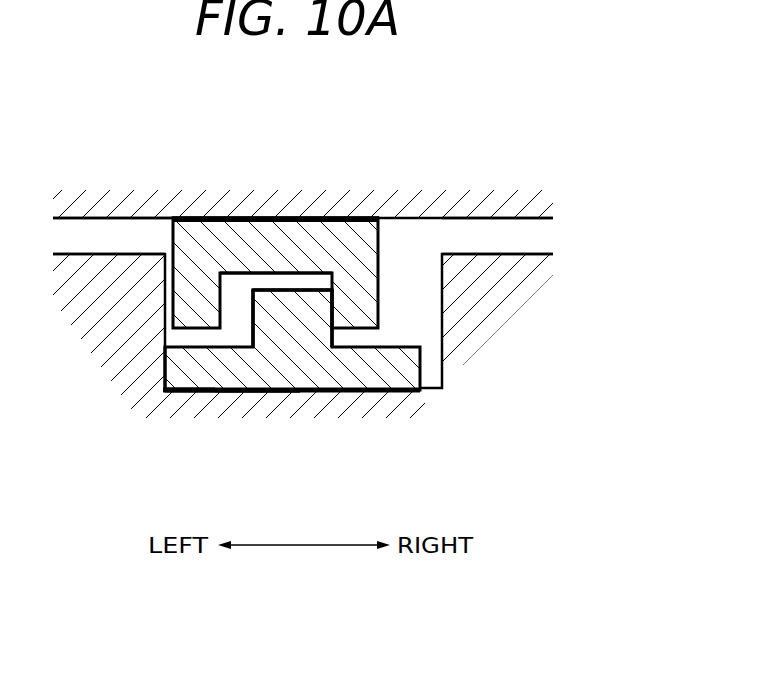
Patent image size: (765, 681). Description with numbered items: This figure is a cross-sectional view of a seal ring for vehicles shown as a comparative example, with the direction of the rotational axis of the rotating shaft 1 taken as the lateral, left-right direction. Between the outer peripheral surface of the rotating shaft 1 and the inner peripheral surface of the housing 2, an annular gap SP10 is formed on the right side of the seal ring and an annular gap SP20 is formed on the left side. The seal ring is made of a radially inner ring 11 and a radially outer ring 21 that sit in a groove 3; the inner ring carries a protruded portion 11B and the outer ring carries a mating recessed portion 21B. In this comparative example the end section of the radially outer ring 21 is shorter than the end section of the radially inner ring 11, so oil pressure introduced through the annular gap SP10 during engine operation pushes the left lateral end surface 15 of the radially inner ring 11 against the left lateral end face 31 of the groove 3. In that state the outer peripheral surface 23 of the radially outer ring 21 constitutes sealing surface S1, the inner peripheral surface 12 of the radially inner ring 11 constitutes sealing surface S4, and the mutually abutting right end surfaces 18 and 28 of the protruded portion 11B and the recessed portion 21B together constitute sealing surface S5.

The rotating shaft 1 is at (89, 272).
The housing 2 is at (108, 197).
The groove 3 is at (428, 367).
The radially inner ring 11 is at (407, 398).
The protruded portion 11B is at (263, 300).
The inner peripheral surface 12 is at (372, 392).
The left lateral end surface 15 is at (178, 385).
The right end surface 18 is at (330, 312).
The radially outer ring 21 is at (366, 213).
The recessed portion 21B is at (272, 282).
The outer peripheral surface 23 is at (283, 217).
The right end surface 28 is at (327, 320).
The left lateral end face 31 is at (182, 392).
The sealing surface S1 is at (333, 217).
The sealing surface S4 is at (240, 392).
The sealing surface S5 is at (333, 290).
The annular gap SP10 is at (532, 230).
The annular gap SP20 is at (138, 230).